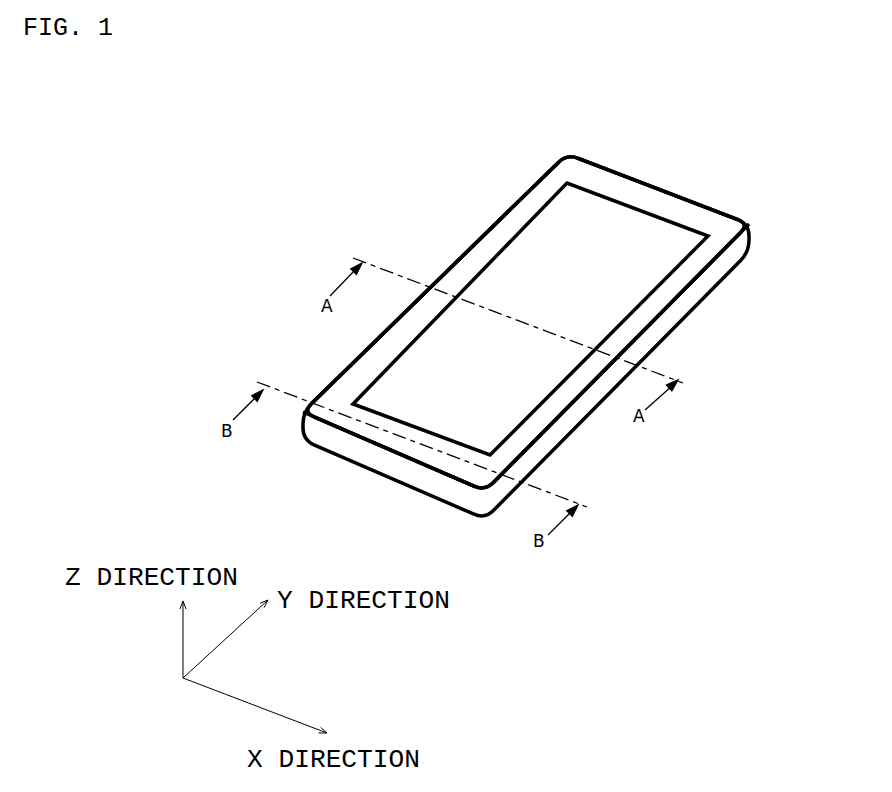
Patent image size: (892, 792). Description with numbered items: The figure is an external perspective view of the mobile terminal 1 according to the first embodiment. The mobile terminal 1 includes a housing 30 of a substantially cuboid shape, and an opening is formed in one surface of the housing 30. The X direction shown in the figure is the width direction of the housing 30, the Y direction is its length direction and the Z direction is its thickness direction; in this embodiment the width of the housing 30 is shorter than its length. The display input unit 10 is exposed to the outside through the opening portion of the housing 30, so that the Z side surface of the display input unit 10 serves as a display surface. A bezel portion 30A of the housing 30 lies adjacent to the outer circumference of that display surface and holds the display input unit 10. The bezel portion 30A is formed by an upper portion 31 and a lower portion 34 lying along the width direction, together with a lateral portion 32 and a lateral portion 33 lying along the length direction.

The mobile terminal 1 is at (414, 198).
The display input unit 10 is at (534, 211).
The housing 30 is at (588, 408).
The bezel portion 30A is at (746, 170).
The upper portion 31 is at (658, 190).
The lateral portion 32 is at (477, 247).
The lateral portion 33 is at (687, 289).
The lower portion 34 is at (362, 456).